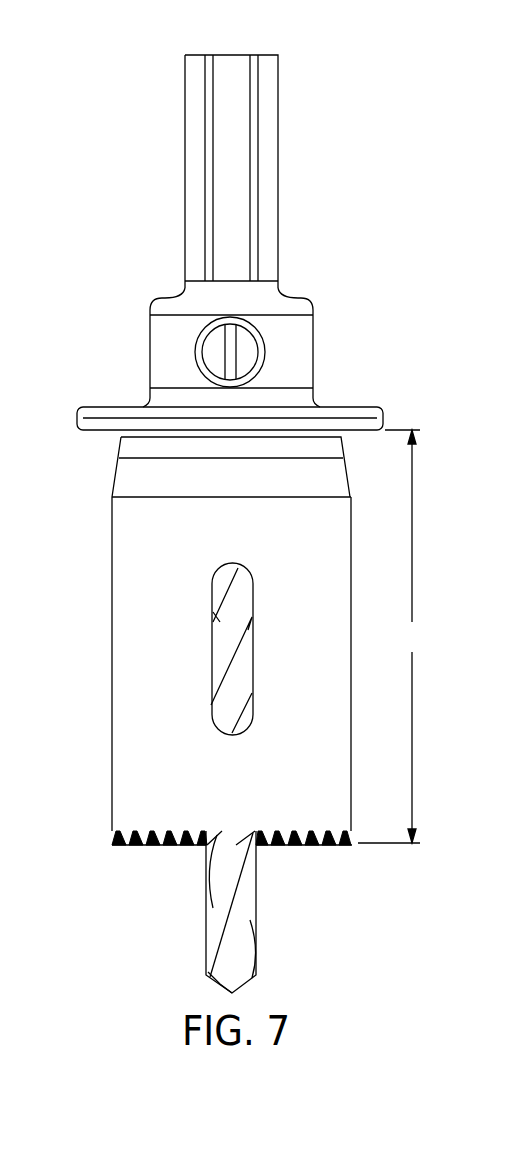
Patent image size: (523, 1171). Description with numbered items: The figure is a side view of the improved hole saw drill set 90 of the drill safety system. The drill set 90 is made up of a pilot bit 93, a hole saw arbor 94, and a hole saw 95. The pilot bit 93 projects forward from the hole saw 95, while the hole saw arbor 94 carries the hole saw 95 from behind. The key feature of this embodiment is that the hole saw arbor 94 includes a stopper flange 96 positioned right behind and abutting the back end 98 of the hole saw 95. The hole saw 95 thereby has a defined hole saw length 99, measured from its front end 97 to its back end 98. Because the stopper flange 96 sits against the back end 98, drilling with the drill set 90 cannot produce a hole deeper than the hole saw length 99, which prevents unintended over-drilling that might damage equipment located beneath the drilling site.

The drill set 90 is at (394, 123).
The pilot bit 93 is at (222, 947).
The hole saw arbor 94 is at (300, 351).
The hole saw 95 is at (85, 663).
The stopper flange 96 is at (384, 418).
The front end 97 is at (112, 841).
The back end 98 is at (116, 432).
The hole saw length 99 is at (393, 636).